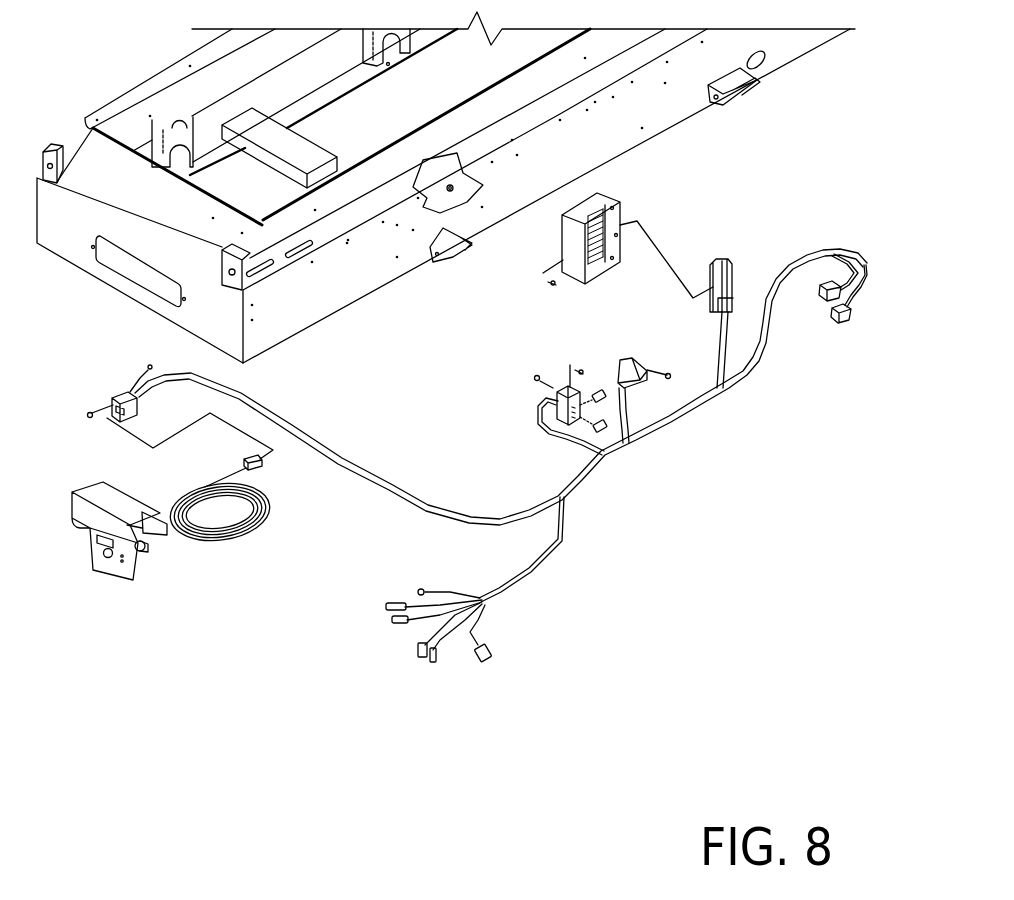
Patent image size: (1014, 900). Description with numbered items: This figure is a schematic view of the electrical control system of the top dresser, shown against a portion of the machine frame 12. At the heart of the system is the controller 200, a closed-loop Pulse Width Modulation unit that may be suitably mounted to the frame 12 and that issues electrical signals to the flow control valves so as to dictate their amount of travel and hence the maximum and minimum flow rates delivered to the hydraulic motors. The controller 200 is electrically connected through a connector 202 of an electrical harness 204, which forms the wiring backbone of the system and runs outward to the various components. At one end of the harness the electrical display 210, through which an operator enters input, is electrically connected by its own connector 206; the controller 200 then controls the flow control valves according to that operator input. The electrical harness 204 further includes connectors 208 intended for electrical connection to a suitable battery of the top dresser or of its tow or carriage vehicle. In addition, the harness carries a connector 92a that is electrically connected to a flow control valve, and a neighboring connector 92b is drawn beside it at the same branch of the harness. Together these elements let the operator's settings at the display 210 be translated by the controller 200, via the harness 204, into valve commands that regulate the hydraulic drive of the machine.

The frame 12 is at (783, 42).
The controller 200 is at (614, 208).
The connector 202 is at (733, 285).
The electrical harness 204 is at (663, 425).
The connector 92a is at (823, 296).
The second connector 92b is at (836, 322).
The connector 206 is at (123, 418).
The connectors 208 is at (432, 662).
The electrical display 210 is at (142, 570).